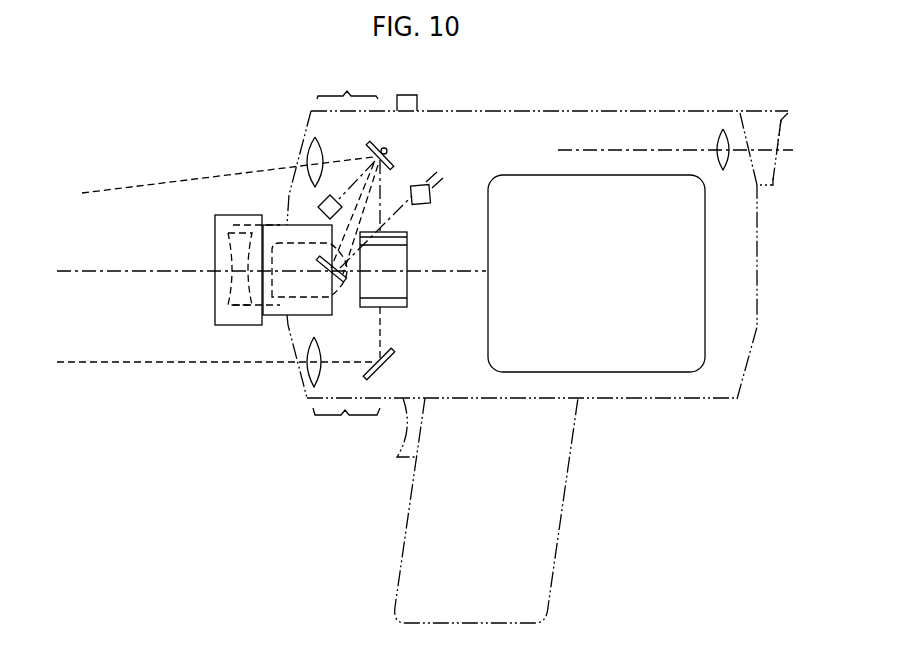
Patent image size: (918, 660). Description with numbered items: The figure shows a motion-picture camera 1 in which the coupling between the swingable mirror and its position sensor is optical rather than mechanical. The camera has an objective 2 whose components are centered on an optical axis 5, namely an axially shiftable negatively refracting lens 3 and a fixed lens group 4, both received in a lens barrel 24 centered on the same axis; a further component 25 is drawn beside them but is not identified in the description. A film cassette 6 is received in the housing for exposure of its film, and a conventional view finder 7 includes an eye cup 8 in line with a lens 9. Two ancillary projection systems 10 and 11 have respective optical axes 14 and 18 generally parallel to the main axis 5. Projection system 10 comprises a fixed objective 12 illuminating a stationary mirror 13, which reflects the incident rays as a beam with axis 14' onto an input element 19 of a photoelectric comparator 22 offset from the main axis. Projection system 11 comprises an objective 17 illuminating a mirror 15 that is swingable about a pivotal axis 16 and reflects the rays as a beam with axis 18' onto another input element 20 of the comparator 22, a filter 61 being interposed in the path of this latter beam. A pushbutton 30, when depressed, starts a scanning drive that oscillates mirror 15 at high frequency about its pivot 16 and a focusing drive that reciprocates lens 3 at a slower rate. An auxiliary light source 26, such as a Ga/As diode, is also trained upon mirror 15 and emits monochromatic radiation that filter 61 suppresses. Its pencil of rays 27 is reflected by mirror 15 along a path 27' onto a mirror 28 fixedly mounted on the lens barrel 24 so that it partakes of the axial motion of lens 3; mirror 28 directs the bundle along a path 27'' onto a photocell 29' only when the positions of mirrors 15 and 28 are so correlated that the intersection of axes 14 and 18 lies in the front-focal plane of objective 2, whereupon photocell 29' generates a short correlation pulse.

The motion-picture camera 1 is at (553, 105).
The objective 2 is at (209, 313).
The axially shiftable lens 3 is at (233, 306).
The fixed lens group 4 is at (276, 298).
The optical axis 5 is at (78, 270).
The film cassette 6 is at (681, 356).
The view finder 7 is at (761, 105).
The eye cup 8 is at (782, 120).
The lens 9 is at (718, 143).
The projection system 10 is at (346, 427).
The projection system 11 is at (347, 81).
The fixed objective 12 is at (309, 378).
The stationary mirror 13 is at (395, 358).
The optical axis 14 is at (214, 347).
The beam axis 14' is at (400, 334).
The swingable mirror 15 is at (370, 147).
The pivotal axis 16 is at (387, 149).
The objective 17 is at (307, 150).
The optical axis 18 is at (220, 175).
The beam axis 18' is at (393, 196).
The input element 19 is at (407, 303).
The input element 20 is at (407, 242).
The photoelectric comparator 22 is at (400, 283).
The lens barrel 24 is at (272, 224).
The lens mount 25 is at (231, 209).
The auxiliary light source 26 is at (320, 207).
The pencil of rays 27 is at (351, 180).
The path 27' is at (354, 218).
The path 27'' is at (399, 232).
The mirror 28 is at (343, 283).
The photocell 29' is at (427, 171).
The pushbutton 30 is at (410, 95).
The filter 61 is at (407, 234).